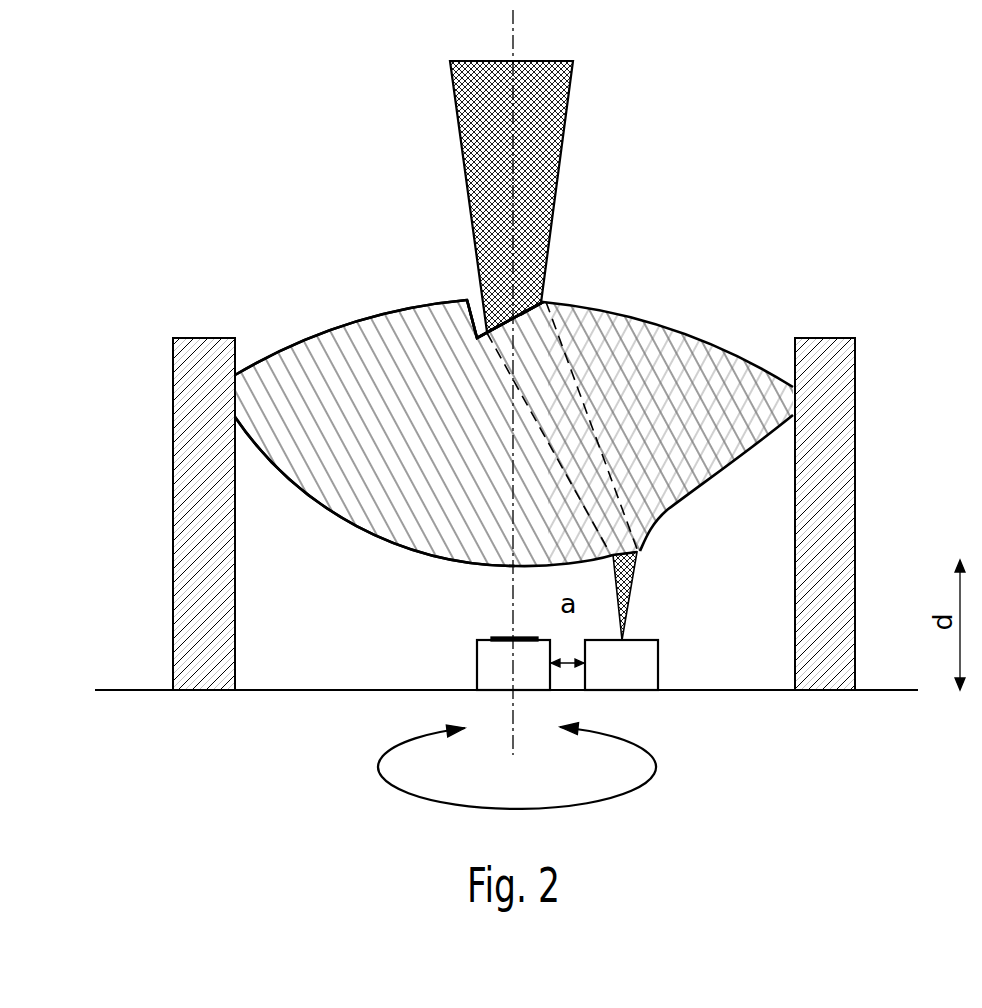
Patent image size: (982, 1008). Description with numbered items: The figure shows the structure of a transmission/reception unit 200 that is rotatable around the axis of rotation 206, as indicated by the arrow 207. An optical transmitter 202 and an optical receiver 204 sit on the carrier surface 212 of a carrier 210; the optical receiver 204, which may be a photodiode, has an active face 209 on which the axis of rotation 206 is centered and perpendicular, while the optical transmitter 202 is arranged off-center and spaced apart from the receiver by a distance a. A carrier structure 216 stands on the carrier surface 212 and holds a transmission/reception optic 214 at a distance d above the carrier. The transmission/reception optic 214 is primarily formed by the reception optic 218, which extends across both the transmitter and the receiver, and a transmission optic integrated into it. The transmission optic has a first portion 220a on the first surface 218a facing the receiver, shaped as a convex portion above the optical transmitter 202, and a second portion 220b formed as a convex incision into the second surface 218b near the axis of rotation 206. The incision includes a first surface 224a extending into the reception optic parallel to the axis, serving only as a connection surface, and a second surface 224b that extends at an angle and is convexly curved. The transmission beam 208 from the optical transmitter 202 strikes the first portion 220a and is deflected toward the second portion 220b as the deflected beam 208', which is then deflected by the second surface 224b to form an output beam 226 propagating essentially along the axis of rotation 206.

The transmission/reception unit 200 is at (202, 158).
The optical transmitter 202 is at (660, 668).
The optical receiver 204 is at (477, 660).
The axis of rotation 206 is at (517, 33).
The arrow 207 is at (653, 767).
The transmission beam 208 is at (669, 596).
The deflected beam 208' is at (626, 427).
The active face 209 is at (500, 638).
The carrier 210 is at (877, 693).
The carrier surface 212 is at (299, 688).
The transmission/reception optic 214 is at (456, 290).
The carrier structure 216 is at (173, 512).
The reception optic 218 is at (356, 333).
The first surface of the reception optic 218a is at (327, 507).
The second surface of the reception optic 218b is at (322, 335).
The first portion of the transmission optic 220a is at (640, 555).
The second portion of the transmission optic 220b is at (528, 305).
The first surface 224a is at (476, 328).
The second surface 224b is at (505, 322).
The output beam 226 is at (567, 108).